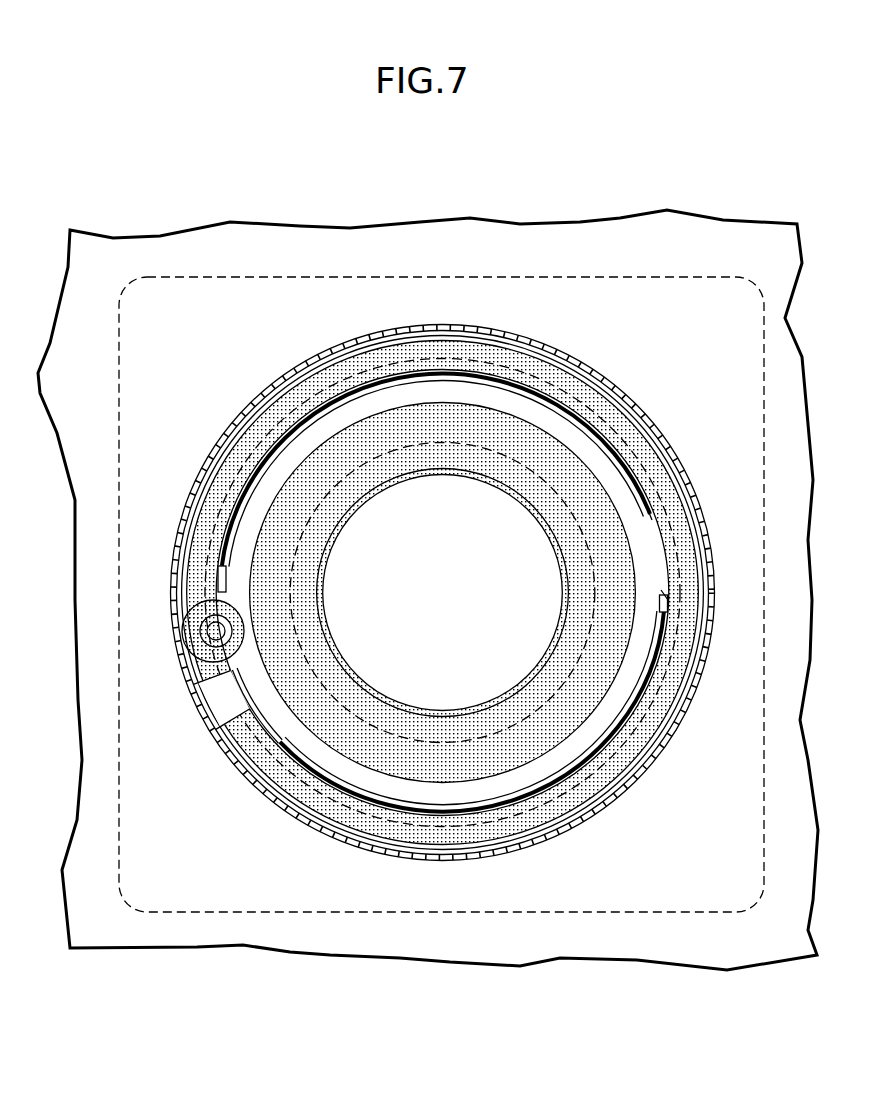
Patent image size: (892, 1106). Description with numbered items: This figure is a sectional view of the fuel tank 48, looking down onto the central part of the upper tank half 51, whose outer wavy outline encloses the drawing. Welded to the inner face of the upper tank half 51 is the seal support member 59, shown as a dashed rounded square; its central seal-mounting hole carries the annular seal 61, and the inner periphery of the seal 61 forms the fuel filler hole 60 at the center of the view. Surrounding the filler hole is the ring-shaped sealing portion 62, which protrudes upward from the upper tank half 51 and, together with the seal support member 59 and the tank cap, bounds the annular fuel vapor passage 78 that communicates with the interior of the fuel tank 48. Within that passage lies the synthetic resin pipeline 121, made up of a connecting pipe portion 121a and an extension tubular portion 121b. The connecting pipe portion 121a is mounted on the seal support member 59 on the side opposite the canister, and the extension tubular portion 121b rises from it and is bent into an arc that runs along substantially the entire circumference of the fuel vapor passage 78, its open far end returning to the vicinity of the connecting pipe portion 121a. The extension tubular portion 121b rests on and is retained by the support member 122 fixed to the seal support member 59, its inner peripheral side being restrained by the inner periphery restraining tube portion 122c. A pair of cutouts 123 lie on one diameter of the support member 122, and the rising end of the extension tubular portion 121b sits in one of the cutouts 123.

The fuel tank 48 is at (262, 200).
The upper tank half 51 is at (212, 240).
The seal support member 59 is at (568, 278).
The fuel vapor passage 78 is at (532, 410).
The cutouts 123 is at (662, 532).
The seal 61 is at (578, 608).
The fuel filler hole 60 is at (575, 648).
The support member 122 is at (443, 593).
The inner periphery restraining tube portion 122c is at (205, 688).
The sealing portion 62 is at (413, 855).
The pipeline 121 is at (201, 738).
The connecting pipe portion 121a is at (245, 655).
The extension tubular portion 121b is at (190, 605).